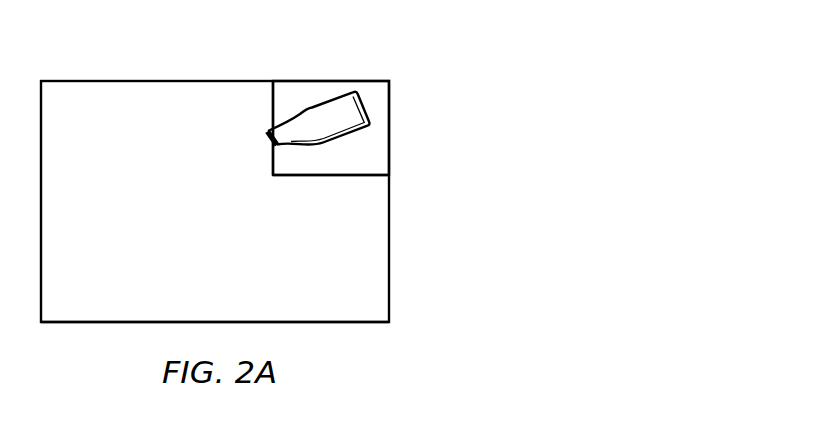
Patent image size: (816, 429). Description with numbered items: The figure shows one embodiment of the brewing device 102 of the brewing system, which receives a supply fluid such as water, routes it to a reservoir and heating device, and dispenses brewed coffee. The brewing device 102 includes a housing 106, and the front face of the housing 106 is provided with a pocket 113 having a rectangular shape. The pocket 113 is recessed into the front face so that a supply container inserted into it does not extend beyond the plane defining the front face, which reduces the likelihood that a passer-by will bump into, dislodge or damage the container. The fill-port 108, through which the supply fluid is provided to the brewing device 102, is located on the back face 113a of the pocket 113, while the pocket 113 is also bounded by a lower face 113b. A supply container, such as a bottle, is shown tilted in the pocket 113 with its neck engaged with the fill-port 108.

The brewing device 102 is at (101, 53).
The housing 106 is at (93, 315).
The fill-port 108 is at (267, 139).
The pocket 113 is at (389, 122).
The back face 113a is at (273, 101).
The window bottom edge 113b is at (327, 175).